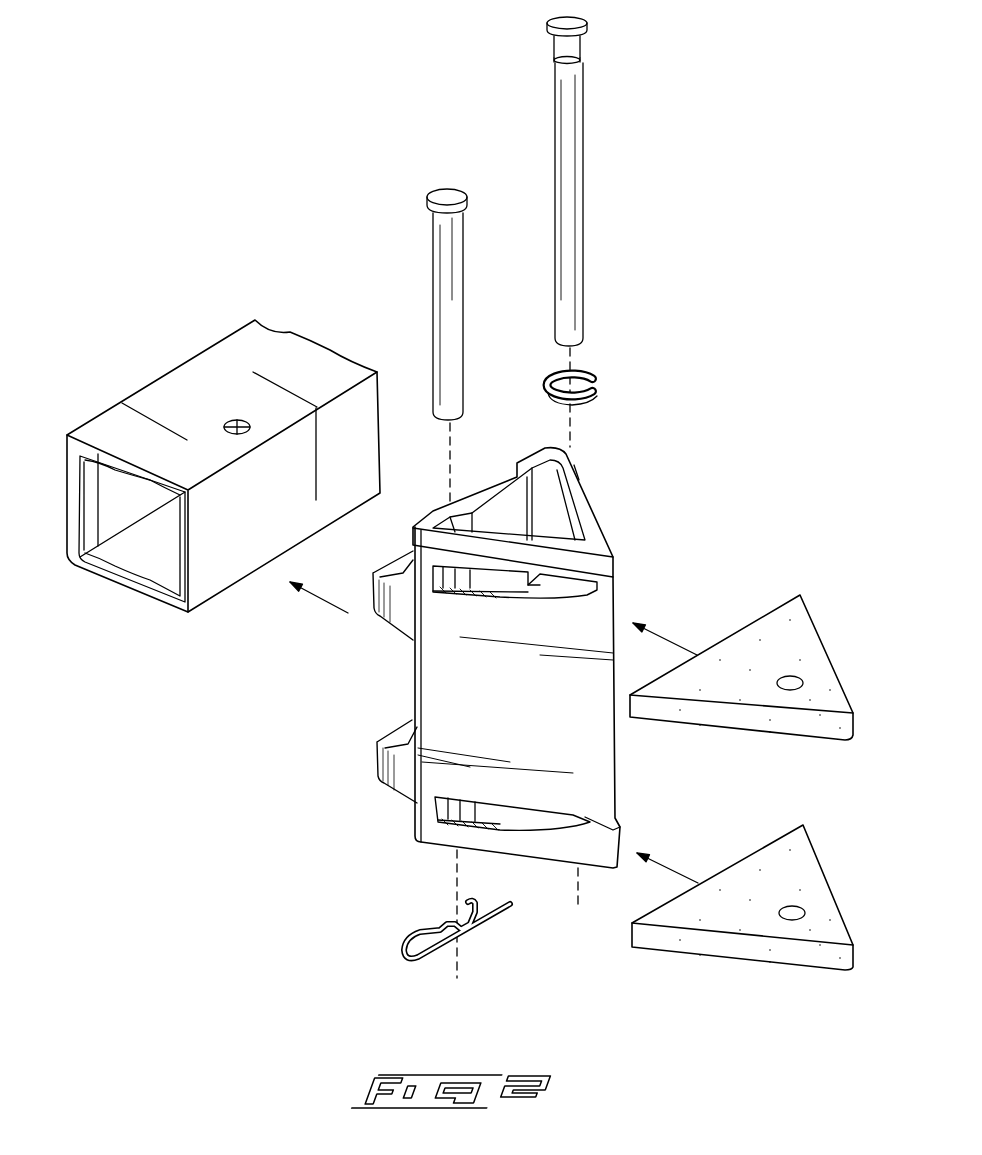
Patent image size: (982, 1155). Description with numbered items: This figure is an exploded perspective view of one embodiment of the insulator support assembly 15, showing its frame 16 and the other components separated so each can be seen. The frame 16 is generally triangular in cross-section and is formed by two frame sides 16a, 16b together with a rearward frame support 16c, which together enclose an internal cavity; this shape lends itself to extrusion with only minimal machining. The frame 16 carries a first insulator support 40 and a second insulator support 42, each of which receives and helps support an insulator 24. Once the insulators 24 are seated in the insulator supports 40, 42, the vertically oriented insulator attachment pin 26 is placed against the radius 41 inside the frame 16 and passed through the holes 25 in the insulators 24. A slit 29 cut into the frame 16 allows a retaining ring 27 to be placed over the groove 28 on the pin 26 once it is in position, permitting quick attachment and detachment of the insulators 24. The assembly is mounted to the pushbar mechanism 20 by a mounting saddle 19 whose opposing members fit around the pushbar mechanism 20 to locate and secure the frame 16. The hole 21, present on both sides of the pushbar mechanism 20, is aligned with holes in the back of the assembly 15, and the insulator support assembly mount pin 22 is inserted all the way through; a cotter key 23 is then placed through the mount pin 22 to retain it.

The insulator support assembly 15 is at (546, 694).
The frame 16 is at (522, 659).
The frame side 16a is at (513, 702).
The frame side 16b is at (548, 494).
The rearward frame support 16c is at (507, 518).
The mounting saddle 19 is at (377, 762).
The pushbar mechanism 20 is at (208, 573).
The hole 21 is at (237, 418).
The insulator support assembly mount pin 22 is at (447, 266).
The cotter key 23 is at (470, 935).
The insulator 24 is at (813, 667).
The hole 25 is at (795, 906).
The insulator attachment pin 26 is at (574, 186).
The retaining ring 27 is at (590, 370).
The groove 28 is at (581, 63).
The slit 29 is at (543, 580).
The first insulator support 40 is at (620, 585).
The radius 41 is at (572, 542).
The second insulator support 42 is at (620, 828).